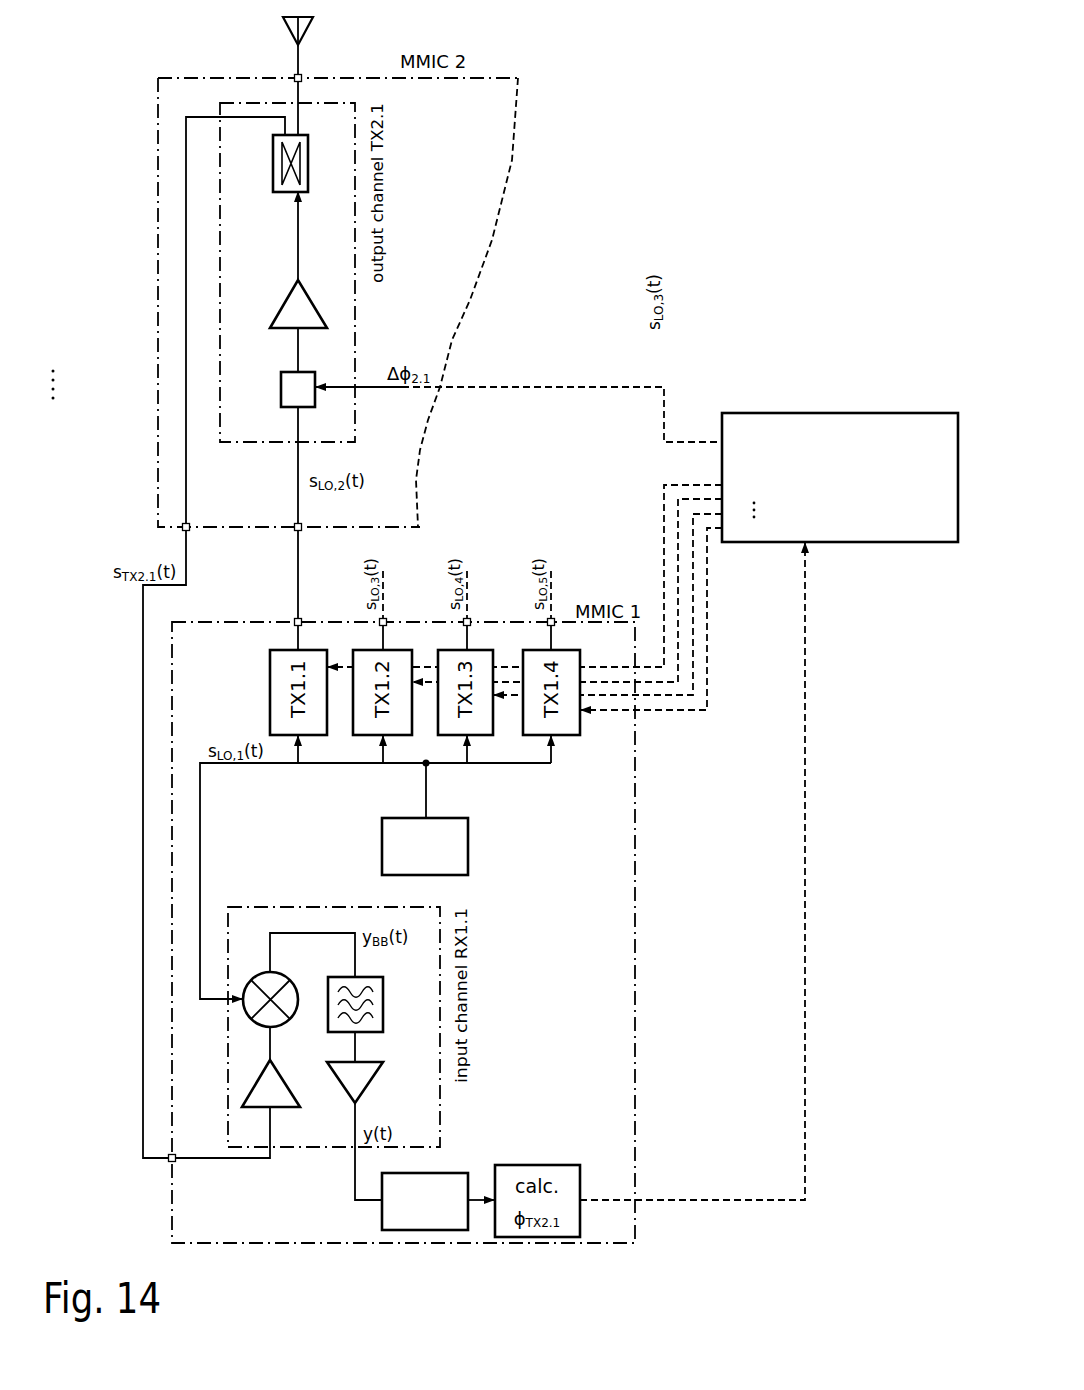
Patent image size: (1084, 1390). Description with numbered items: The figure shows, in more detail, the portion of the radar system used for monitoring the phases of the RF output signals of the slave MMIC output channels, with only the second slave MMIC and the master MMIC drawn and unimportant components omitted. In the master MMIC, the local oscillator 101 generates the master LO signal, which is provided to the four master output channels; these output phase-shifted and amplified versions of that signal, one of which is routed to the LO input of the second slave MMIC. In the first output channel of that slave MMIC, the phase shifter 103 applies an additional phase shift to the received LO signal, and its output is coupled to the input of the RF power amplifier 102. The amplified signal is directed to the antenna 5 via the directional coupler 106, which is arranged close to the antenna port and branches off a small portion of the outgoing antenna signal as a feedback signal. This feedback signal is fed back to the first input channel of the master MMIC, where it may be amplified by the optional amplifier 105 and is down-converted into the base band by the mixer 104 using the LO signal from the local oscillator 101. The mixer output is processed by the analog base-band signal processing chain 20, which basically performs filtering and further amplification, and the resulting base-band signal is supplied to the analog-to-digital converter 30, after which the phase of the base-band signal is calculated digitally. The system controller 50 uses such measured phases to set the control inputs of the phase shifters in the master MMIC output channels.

The antenna 5 is at (290, 33).
The directional coupler 106 is at (273, 178).
The RF power amplifier 102 is at (284, 295).
The phase shifter 103 is at (281, 390).
The local oscillator 101 is at (468, 833).
The mixer 104 is at (292, 980).
The amplifier 105 is at (281, 1077).
The analog base-band signal processing chain 20 is at (390, 977).
The analog-to-digital converter 30 is at (425, 1201).
The system controller 50 is at (840, 479).